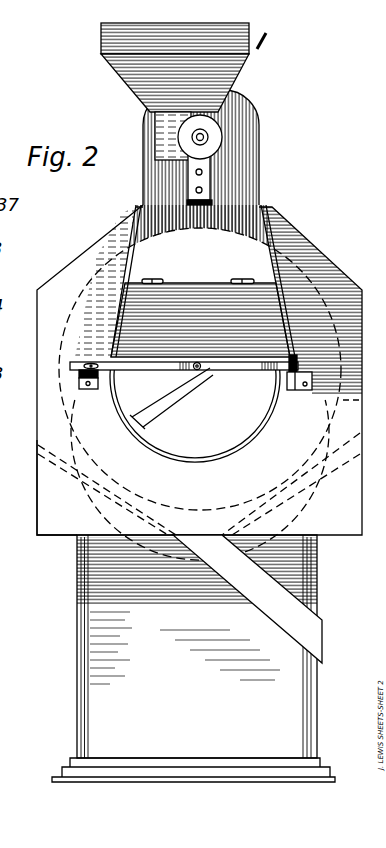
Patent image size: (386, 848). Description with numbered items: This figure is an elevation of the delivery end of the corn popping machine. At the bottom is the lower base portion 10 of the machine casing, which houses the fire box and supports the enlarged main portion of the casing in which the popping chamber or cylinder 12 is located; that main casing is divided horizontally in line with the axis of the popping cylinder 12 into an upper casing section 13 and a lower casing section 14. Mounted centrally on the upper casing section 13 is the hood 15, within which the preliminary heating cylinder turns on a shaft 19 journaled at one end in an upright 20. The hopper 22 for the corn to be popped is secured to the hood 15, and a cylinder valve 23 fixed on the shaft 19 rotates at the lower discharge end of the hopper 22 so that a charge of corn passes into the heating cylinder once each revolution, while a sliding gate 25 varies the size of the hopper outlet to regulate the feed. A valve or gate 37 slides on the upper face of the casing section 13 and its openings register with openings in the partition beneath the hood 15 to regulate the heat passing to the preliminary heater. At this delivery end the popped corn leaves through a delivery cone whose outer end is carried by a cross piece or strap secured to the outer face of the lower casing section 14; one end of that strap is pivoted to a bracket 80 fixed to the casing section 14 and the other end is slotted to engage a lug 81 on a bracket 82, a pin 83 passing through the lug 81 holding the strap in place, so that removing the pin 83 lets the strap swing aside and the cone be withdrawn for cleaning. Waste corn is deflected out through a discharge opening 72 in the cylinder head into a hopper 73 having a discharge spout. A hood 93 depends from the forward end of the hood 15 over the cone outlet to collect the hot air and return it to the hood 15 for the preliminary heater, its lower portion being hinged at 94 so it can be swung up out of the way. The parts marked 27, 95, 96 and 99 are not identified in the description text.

The lower base portion 10 is at (75, 640).
The popping chamber or cylinder 12 is at (333, 252).
The upper casing section 13 is at (86, 258).
The lower casing section 14 is at (48, 522).
The hood 15 is at (252, 103).
The shaft 19 is at (206, 136).
The upright 20 is at (202, 180).
The hopper 22 is at (138, 70).
The cylinder valve 23 is at (190, 127).
The sliding gate 25 is at (262, 47).
The shelf bar 27 is at (154, 365).
The valve or gate 37 is at (213, 203).
The discharge opening 72 is at (293, 631).
The hopper 73 is at (270, 511).
The bracket 80 is at (313, 379).
The lug 81 is at (78, 373).
The bracket 82 is at (80, 386).
The pin 83 is at (87, 362).
The hood 93 is at (200, 299).
The hinge 94 is at (150, 278).
The rod 95 is at (171, 396).
The bolt 96 is at (200, 368).
The drum 99 is at (243, 432).